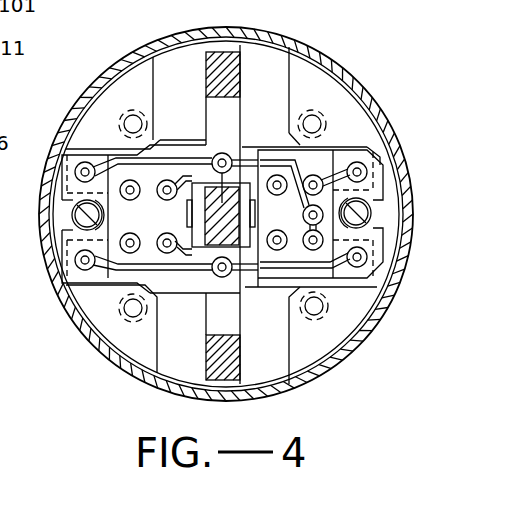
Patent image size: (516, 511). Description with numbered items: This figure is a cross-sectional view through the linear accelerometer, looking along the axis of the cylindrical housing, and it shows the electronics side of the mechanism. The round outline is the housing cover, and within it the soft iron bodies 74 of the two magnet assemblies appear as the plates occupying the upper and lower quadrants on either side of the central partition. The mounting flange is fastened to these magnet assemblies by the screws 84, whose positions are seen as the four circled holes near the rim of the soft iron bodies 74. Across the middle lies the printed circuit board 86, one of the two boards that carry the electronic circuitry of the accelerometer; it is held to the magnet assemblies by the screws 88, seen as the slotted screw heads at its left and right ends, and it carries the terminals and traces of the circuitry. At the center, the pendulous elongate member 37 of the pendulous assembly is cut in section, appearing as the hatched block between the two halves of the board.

The pendulous elongate member 37 is at (225, 153).
The soft iron body 74 is at (98, 122).
The screws 84 is at (133, 114).
The printed circuit board 86 is at (198, 293).
The screws 88 is at (70, 214).